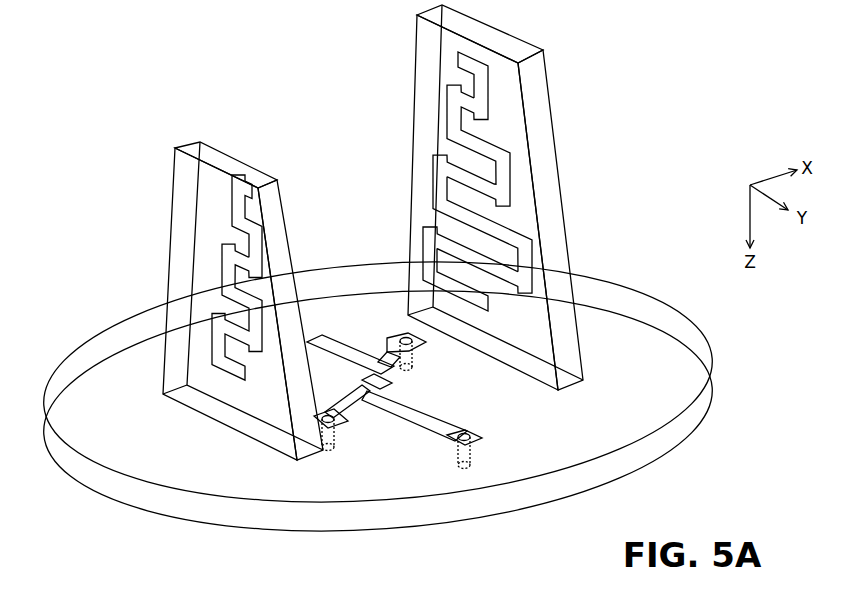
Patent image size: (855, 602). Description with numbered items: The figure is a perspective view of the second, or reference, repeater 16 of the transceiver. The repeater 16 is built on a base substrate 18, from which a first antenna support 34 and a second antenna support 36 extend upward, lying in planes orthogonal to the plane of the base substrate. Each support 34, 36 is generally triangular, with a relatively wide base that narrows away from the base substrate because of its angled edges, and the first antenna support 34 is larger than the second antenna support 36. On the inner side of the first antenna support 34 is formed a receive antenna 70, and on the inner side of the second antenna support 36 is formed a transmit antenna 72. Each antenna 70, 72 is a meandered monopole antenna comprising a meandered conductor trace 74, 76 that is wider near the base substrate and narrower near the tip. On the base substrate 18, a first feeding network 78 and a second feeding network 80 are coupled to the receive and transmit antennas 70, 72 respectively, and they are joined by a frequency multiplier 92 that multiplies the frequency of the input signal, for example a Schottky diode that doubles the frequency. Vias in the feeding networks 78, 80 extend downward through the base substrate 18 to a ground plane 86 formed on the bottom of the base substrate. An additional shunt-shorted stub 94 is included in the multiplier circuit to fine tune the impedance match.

The second repeater 16 is at (703, 133).
The base substrate 18 is at (668, 318).
The first antenna support 34 is at (468, 197).
The second antenna support 36 is at (213, 301).
The receive antenna 70 is at (519, 146).
The transmit antenna 72 is at (217, 379).
The meandered conductor trace 74 is at (432, 192).
The meandered conductor trace 76 is at (250, 235).
The first feeding network 78 is at (366, 325).
The second feeding network 80 is at (366, 425).
The ground plane 86 is at (173, 513).
The frequency multiplier 92 is at (392, 383).
The shunt-shorted stub 94 is at (465, 412).